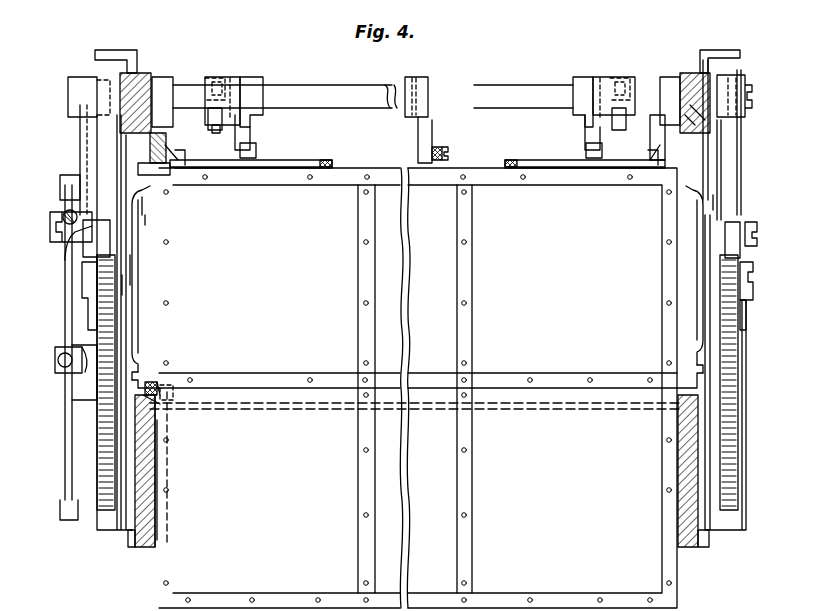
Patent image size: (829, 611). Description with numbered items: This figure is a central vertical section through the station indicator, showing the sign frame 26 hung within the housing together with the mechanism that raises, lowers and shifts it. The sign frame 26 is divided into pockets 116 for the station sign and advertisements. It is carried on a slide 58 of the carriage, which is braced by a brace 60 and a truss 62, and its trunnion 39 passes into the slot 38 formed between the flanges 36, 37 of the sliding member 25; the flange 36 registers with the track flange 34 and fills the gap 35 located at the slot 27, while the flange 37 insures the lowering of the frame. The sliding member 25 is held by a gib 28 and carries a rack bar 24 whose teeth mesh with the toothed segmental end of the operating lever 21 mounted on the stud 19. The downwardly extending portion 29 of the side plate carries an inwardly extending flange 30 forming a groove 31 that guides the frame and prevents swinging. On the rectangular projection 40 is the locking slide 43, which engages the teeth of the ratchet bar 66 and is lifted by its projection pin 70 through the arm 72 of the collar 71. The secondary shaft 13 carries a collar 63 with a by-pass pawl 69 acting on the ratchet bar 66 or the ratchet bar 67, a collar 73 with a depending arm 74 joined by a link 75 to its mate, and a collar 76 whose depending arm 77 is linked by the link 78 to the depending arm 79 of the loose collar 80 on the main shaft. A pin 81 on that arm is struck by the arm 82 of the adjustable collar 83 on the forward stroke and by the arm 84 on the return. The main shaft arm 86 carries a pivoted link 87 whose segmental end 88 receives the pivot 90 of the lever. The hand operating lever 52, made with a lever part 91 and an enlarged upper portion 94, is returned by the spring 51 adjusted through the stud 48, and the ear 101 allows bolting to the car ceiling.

The secondary shaft 13 is at (308, 95).
The stud 19 is at (55, 231).
The operating lever 21 is at (105, 243).
The rack bar 24 is at (100, 434).
The sliding member 25 is at (100, 525).
The sign frame 26 is at (308, 376).
The slot 27 is at (133, 268).
The gib 28 is at (122, 284).
The downwardly extending portion 29 is at (148, 543).
The inwardly extending flange 30 is at (172, 489).
The groove 31 is at (156, 532).
The flange 34 is at (142, 197).
The gap 35 is at (145, 220).
The flange 36 is at (160, 410).
The flange 37 is at (142, 362).
The slot 38 is at (146, 372).
The trunnion 39 is at (150, 385).
The rectangular projection 40 is at (700, 72).
The locking slide 43 is at (147, 140).
The stud 48 is at (85, 372).
The spring 51 is at (58, 358).
The operating lever 52 is at (57, 352).
The slide 58 is at (165, 397).
The brace 60 is at (330, 165).
The truss 62 is at (305, 160).
The collar 63 is at (162, 98).
The ratchet bar 66 is at (155, 155).
The ratchet bar 67 is at (178, 165).
The by-pass pawl 69 is at (185, 160).
The projection pin 70 is at (655, 125).
The collar 71 is at (700, 120).
The arm 72 is at (700, 132).
The collar 73 is at (414, 85).
The depending arm 74 is at (430, 130).
The link 75 is at (432, 153).
The collar 76 is at (250, 85).
The depending arm 77 is at (248, 128).
The link 78 is at (255, 150).
The depending arm 79 is at (255, 170).
The loose collar 80 is at (233, 77).
The pin 81 is at (210, 120).
The arm 82 is at (225, 78).
The adjustable collar 83 is at (205, 80).
The arm 84 is at (215, 130).
The arm 86 is at (742, 80).
The pivoted link 87 is at (100, 165).
The segmental end 88 is at (83, 314).
The pivot 90 is at (757, 232).
The lever part 91 is at (80, 118).
The upper portion 94 is at (68, 195).
The ear 101 is at (125, 55).
The pocket 116 is at (190, 580).